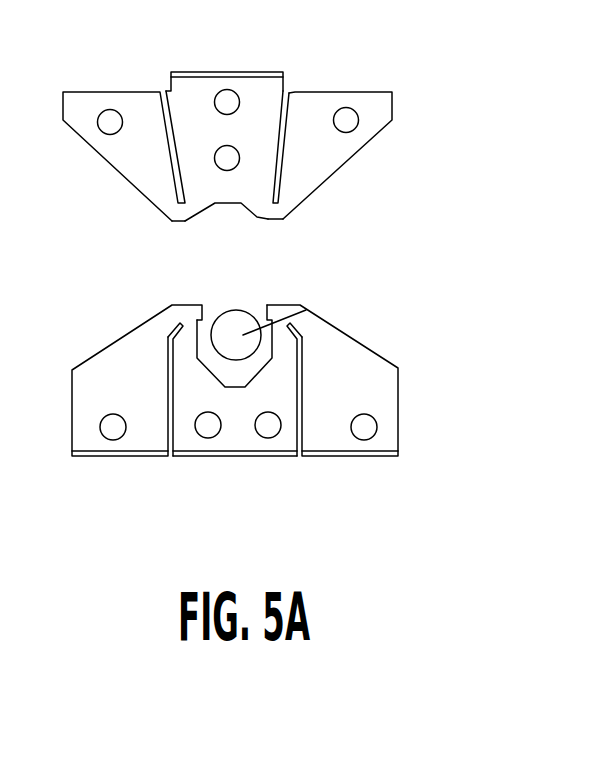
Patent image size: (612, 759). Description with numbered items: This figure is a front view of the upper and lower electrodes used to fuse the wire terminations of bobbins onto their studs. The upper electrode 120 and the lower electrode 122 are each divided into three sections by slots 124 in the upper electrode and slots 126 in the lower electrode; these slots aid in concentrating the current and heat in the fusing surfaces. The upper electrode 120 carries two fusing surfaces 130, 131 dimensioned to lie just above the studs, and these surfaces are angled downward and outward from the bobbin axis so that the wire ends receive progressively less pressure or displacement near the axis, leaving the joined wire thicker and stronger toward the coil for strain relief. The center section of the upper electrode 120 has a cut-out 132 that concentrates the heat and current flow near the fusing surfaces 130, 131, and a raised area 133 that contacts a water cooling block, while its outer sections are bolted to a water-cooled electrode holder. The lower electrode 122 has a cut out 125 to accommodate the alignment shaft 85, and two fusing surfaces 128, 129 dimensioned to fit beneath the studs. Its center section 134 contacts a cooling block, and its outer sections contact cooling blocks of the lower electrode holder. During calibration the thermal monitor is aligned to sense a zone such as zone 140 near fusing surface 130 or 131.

The upper electrode 120 is at (264, 133).
The lower electrode 122 is at (284, 398).
The slots 124 is at (165, 114).
The raised area 133 is at (246, 72).
The zone 140 is at (280, 207).
The fusing surface 130 is at (184, 222).
The fusing surface 131 is at (268, 220).
The cut-out 132 is at (247, 243).
The fusing surface 128 is at (190, 304).
The cut out 125 is at (235, 375).
The fusing surface 129 is at (306, 310).
The alignment shaft 85 is at (305, 310).
The slots 126 is at (297, 430).
The center section 134 is at (278, 456).